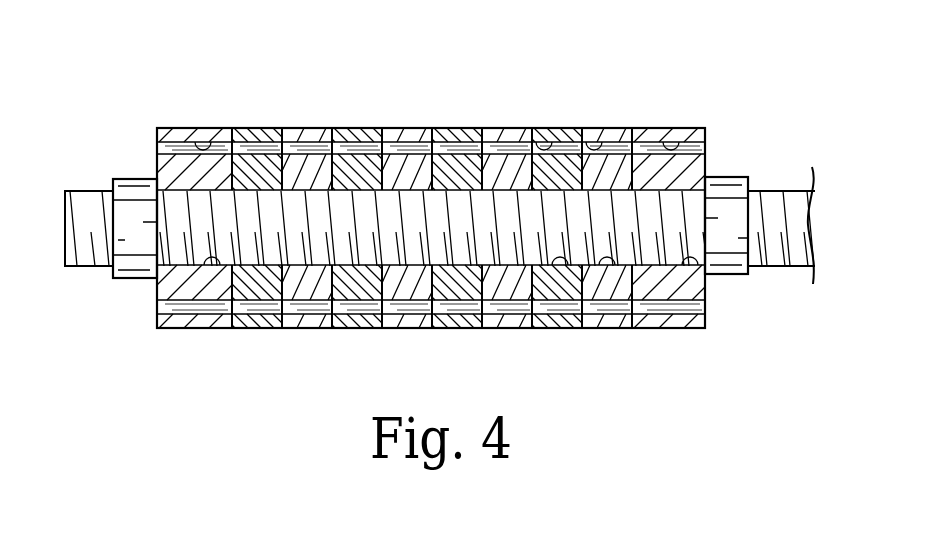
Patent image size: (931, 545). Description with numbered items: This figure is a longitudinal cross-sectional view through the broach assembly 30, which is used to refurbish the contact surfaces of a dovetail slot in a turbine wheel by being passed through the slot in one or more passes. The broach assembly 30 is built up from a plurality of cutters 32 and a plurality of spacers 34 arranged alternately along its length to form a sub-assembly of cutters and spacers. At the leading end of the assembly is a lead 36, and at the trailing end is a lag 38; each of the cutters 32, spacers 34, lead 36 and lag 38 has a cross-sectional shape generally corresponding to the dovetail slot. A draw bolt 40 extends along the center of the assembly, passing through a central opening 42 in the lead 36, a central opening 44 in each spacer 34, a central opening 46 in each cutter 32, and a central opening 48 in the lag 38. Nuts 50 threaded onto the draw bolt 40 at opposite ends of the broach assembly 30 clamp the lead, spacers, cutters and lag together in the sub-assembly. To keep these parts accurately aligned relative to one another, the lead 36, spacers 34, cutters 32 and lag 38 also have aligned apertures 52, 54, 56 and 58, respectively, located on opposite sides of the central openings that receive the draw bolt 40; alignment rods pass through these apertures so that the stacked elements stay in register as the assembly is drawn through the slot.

The broach assembly 30 is at (320, 78).
The cutters 32 is at (253, 128).
The spacers 34 is at (598, 128).
The lead 36 is at (663, 328).
The lag 38 is at (190, 328).
The draw bolt 40 is at (792, 266).
The central opening 42 is at (694, 268).
The central opening 44 is at (610, 268).
The central opening 46 is at (567, 268).
The central opening 48 is at (223, 268).
The nuts 50 is at (119, 178).
The aperture 52 is at (666, 134).
The aperture 54 is at (588, 134).
The aperture 56 is at (537, 134).
The aperture 58 is at (199, 134).